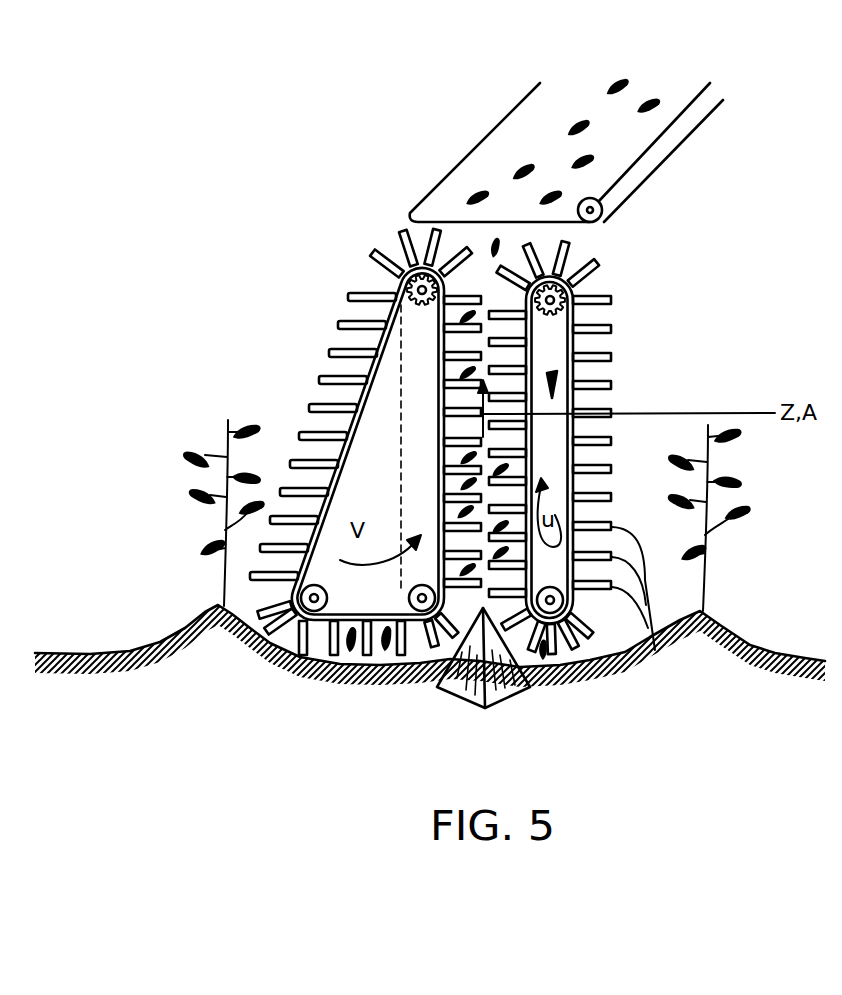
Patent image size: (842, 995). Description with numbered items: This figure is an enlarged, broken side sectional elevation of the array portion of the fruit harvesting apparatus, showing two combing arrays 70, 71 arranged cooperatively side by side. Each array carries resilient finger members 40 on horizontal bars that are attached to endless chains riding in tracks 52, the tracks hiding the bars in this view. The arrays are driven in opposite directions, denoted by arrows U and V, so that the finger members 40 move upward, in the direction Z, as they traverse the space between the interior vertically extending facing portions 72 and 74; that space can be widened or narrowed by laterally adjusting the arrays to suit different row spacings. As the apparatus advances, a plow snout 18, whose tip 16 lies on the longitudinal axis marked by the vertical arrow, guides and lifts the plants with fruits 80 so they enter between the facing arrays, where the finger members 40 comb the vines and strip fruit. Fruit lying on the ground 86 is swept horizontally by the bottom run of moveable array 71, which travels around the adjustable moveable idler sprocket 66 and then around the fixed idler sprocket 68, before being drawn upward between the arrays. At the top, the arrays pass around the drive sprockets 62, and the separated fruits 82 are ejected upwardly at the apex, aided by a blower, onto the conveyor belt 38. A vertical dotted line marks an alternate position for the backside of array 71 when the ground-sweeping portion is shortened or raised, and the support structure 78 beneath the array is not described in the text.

The tip of plow snout 16 is at (485, 708).
The plow snout 18 is at (512, 688).
The conveyor belt 38 is at (650, 163).
The resilient finger members 40 is at (610, 328).
The tracks 52 is at (573, 320).
The drive sprockets 62 is at (403, 287).
The adjustable moveable idler sprocket 66 is at (290, 648).
The fixed idler sprocket 68 is at (377, 683).
The array 70 is at (560, 372).
The moveable array 71 is at (368, 455).
The interior vertically extending facing portion 72 is at (544, 461).
The interior vertically extending facing portion 74 is at (428, 487).
The support legs 78 is at (410, 687).
The plants with fruits 80 is at (225, 530).
The separated fruits 82 is at (518, 160).
The ground 86 is at (178, 630).